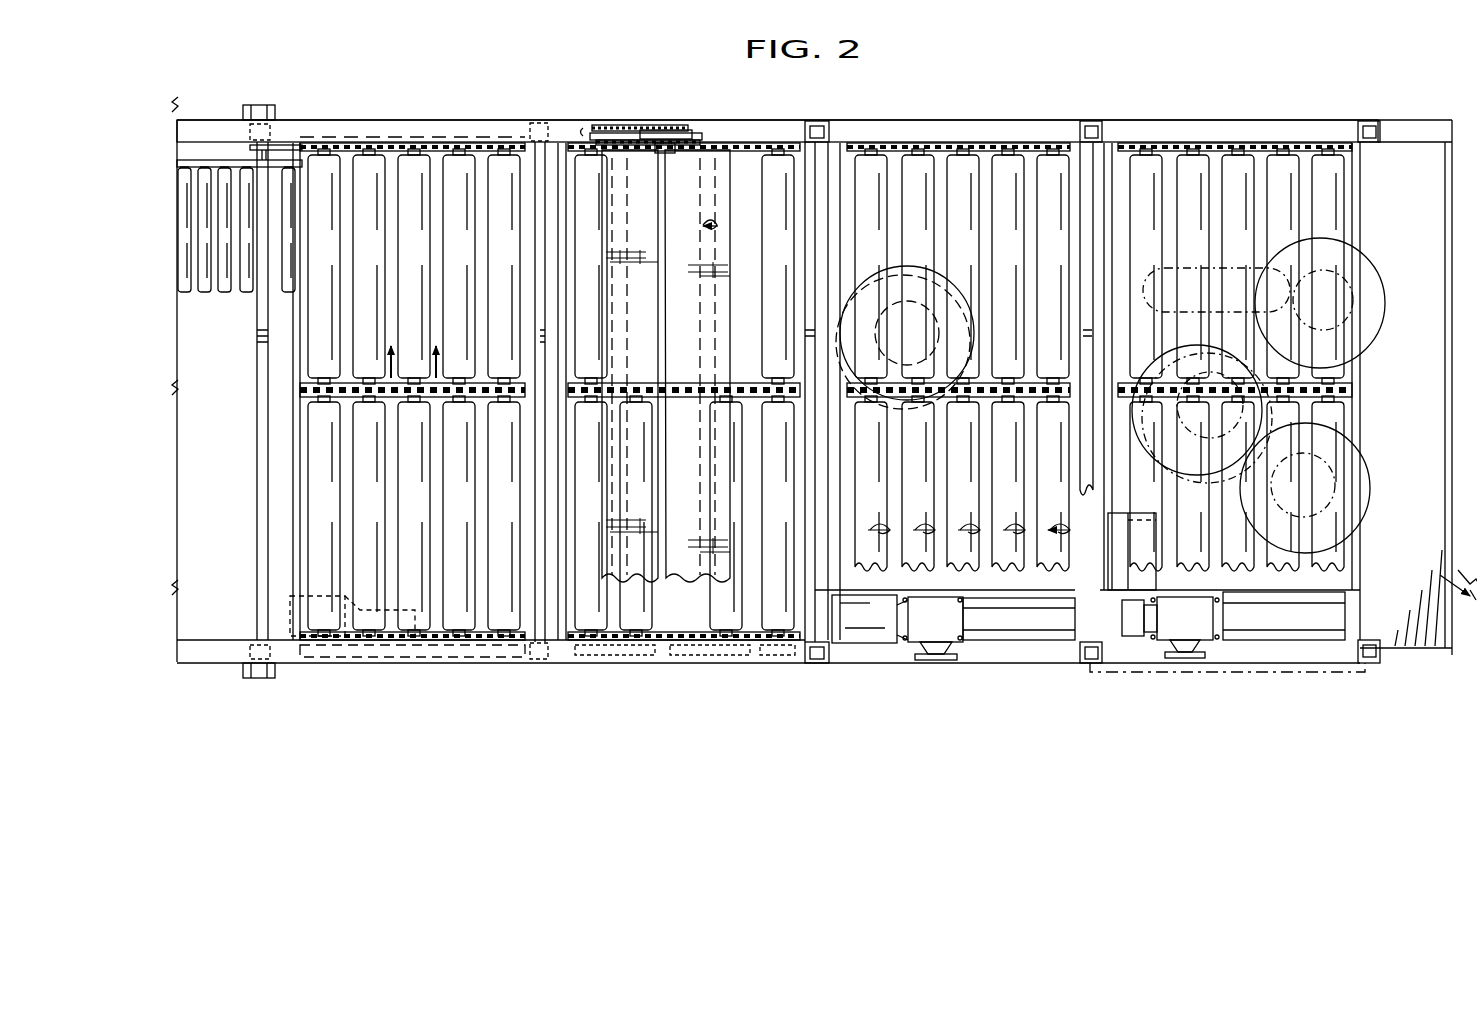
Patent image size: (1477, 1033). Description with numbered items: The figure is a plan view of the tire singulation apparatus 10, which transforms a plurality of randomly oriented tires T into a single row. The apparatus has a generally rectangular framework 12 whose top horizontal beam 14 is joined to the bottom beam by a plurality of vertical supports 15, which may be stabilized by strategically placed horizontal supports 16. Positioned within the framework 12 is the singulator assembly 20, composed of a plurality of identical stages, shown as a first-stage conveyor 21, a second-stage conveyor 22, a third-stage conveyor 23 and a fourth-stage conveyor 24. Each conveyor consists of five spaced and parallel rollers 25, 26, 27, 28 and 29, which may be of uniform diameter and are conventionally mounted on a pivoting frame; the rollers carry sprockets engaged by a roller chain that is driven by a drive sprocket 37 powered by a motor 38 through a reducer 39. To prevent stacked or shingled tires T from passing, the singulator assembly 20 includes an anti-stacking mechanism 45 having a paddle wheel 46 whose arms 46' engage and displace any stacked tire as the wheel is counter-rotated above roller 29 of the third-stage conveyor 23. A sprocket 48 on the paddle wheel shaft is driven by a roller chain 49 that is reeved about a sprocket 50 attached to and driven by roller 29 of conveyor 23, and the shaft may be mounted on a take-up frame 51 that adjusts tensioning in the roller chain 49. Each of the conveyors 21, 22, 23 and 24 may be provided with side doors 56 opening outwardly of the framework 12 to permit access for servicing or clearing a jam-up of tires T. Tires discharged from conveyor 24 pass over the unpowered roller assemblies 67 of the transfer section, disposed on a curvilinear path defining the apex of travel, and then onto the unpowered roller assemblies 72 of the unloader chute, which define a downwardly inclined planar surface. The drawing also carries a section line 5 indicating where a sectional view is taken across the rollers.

The tire singulation apparatus 10 is at (1084, 88).
The framework 12 is at (484, 120).
The top horizontal beam 14 is at (444, 120).
The vertical supports 15 is at (1097, 125).
The horizontal supports 16 is at (1226, 128).
The singulator assembly 20 is at (910, 128).
The first-stage conveyor 21 is at (1310, 146).
The second-stage conveyor 22 is at (943, 156).
The third-stage conveyor 23 is at (753, 150).
The fourth-stage conveyor 24 is at (381, 148).
The roller 25 is at (500, 308).
The roller 26 is at (462, 634).
The roller 27 is at (408, 175).
The roller 28 is at (365, 526).
The roller 29 is at (318, 487).
The drive sprocket 37 is at (1194, 657).
The motor 38 is at (1128, 540).
The reducer 39 is at (1166, 620).
The anti-stacking mechanism 45 is at (598, 192).
The paddle wheel 46 is at (572, 366).
The arms 46' is at (733, 366).
The sprocket 48 is at (679, 125).
The roller chain 49 is at (620, 131).
The sprocket 50 is at (595, 128).
The take-up frame 51 is at (654, 133).
The side doors 56 is at (1346, 680).
The unpowered roller assemblies 67 is at (290, 288).
The unpowered roller assemblies 72 is at (187, 166).
The section line 5 is at (376, 486).
The tires T is at (952, 282).